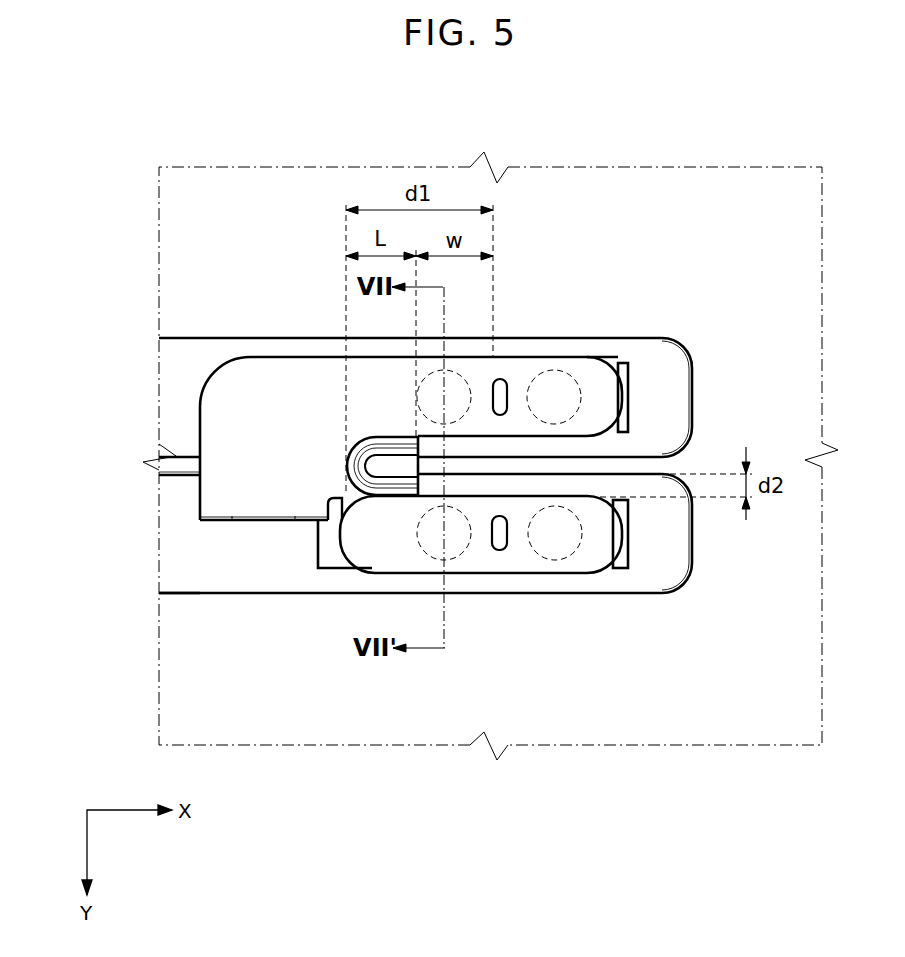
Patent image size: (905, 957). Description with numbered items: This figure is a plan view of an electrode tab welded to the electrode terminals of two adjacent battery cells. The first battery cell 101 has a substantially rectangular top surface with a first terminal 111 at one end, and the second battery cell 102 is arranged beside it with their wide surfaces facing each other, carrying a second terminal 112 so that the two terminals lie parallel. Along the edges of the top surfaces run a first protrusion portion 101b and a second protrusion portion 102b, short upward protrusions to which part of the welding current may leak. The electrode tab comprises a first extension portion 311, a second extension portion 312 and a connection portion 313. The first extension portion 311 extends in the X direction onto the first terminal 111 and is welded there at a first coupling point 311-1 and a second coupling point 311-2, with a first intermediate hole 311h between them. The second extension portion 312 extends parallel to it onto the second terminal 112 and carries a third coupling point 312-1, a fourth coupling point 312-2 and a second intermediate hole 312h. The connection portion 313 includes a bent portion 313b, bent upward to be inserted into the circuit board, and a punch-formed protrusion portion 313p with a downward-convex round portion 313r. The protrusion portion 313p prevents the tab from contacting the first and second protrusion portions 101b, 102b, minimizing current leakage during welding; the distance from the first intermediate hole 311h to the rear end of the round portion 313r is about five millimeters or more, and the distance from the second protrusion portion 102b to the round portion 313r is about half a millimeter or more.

The first battery cell 101 is at (283, 348).
The first protrusion portion 101b is at (192, 456).
The second battery cell 102 is at (281, 584).
The second protrusion portion 102b is at (190, 592).
The first terminal 111 is at (630, 393).
The second terminal 112 is at (633, 560).
The first extension portion 311 is at (600, 380).
The first coupling point 311-1 is at (572, 377).
The second coupling point 311-2 is at (417, 403).
The first intermediate hole 311h is at (505, 380).
The second extension portion 312 is at (595, 563).
The third coupling point 312-1 is at (545, 560).
The fourth coupling point 312-2 is at (458, 556).
The second intermediate hole 312h is at (498, 551).
The connection portion 313 is at (255, 433).
The bent portion 313b is at (243, 522).
The protrusion portion 313p is at (320, 500).
The round portion 313r is at (376, 467).